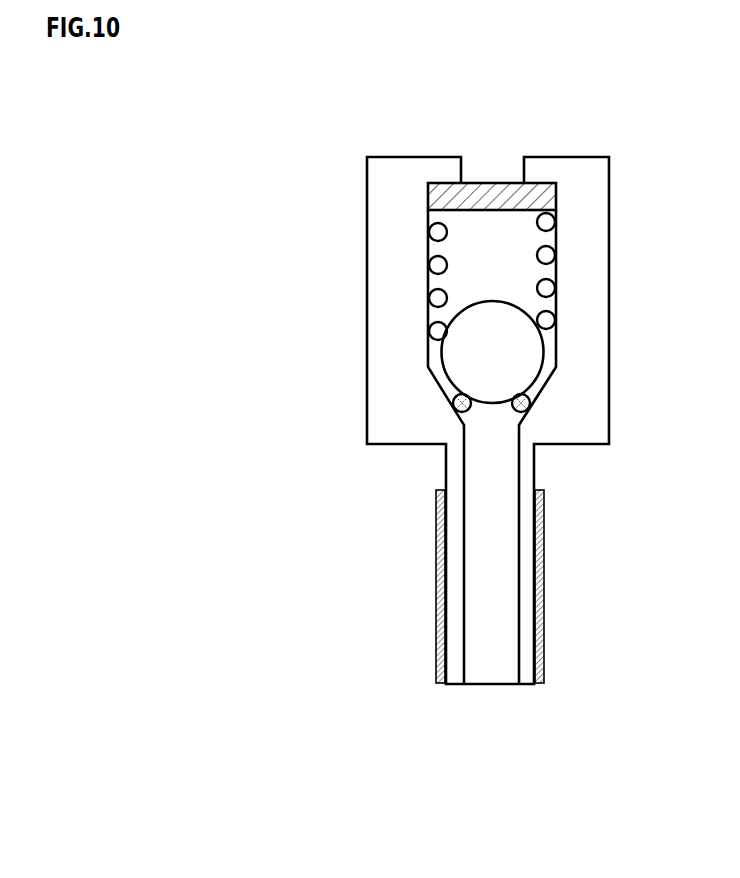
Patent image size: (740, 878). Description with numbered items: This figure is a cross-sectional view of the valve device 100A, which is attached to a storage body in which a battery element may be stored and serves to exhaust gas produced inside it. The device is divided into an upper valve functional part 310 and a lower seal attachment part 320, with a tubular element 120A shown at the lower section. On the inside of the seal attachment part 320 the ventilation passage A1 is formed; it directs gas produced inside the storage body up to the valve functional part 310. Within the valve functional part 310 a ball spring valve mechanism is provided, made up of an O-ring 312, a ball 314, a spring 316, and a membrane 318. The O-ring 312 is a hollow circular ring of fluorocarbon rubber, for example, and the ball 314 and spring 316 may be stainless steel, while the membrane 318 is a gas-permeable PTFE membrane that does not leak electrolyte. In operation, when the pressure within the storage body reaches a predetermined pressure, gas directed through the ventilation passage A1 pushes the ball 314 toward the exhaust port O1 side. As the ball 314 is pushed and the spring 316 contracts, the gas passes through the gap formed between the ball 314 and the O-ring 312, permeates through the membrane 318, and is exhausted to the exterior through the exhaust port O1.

The valve device 100A is at (259, 282).
The valve functional part 310 is at (320, 157).
The seal attachment part 320 is at (320, 450).
The membrane 318 is at (556, 197).
The spring 316 is at (546, 255).
The ball 314 is at (533, 348).
The O-ring 312 is at (532, 404).
The tube 120A is at (544, 617).
The exhaust port O1 is at (493, 168).
The ventilation passage A1 is at (492, 640).